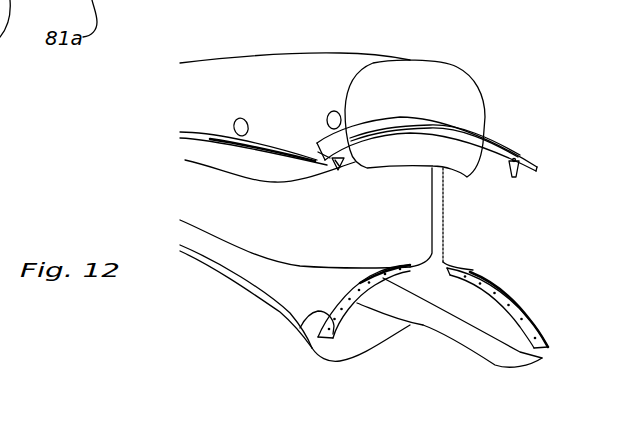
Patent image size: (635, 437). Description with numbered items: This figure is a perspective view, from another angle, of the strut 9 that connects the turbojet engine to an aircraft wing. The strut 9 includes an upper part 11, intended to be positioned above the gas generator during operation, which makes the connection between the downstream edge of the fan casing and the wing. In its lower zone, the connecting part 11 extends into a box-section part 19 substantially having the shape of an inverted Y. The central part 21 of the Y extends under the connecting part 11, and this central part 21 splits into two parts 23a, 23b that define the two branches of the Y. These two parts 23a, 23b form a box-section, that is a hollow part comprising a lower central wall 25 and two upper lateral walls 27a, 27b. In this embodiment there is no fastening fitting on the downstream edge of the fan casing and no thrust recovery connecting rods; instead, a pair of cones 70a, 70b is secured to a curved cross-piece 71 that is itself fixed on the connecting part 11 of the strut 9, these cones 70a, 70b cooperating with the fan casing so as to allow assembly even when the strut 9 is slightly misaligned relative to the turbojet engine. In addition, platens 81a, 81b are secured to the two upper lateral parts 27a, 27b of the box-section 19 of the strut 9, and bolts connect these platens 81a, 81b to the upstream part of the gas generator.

The strut 9 is at (217, 51).
The upper part 11 is at (372, 60).
The curved cross-piece 71 is at (503, 140).
The cone 70a is at (190, 160).
The cone 70b is at (513, 174).
The central part 21 is at (233, 209).
The box-section part 19 is at (292, 280).
The upper lateral wall 27a is at (315, 296).
The platen 81a is at (300, 328).
The part 23a is at (345, 373).
The lower central wall 25 is at (412, 323).
The part 23b is at (507, 373).
The upper lateral wall 27b is at (463, 290).
The platen 81b is at (527, 306).